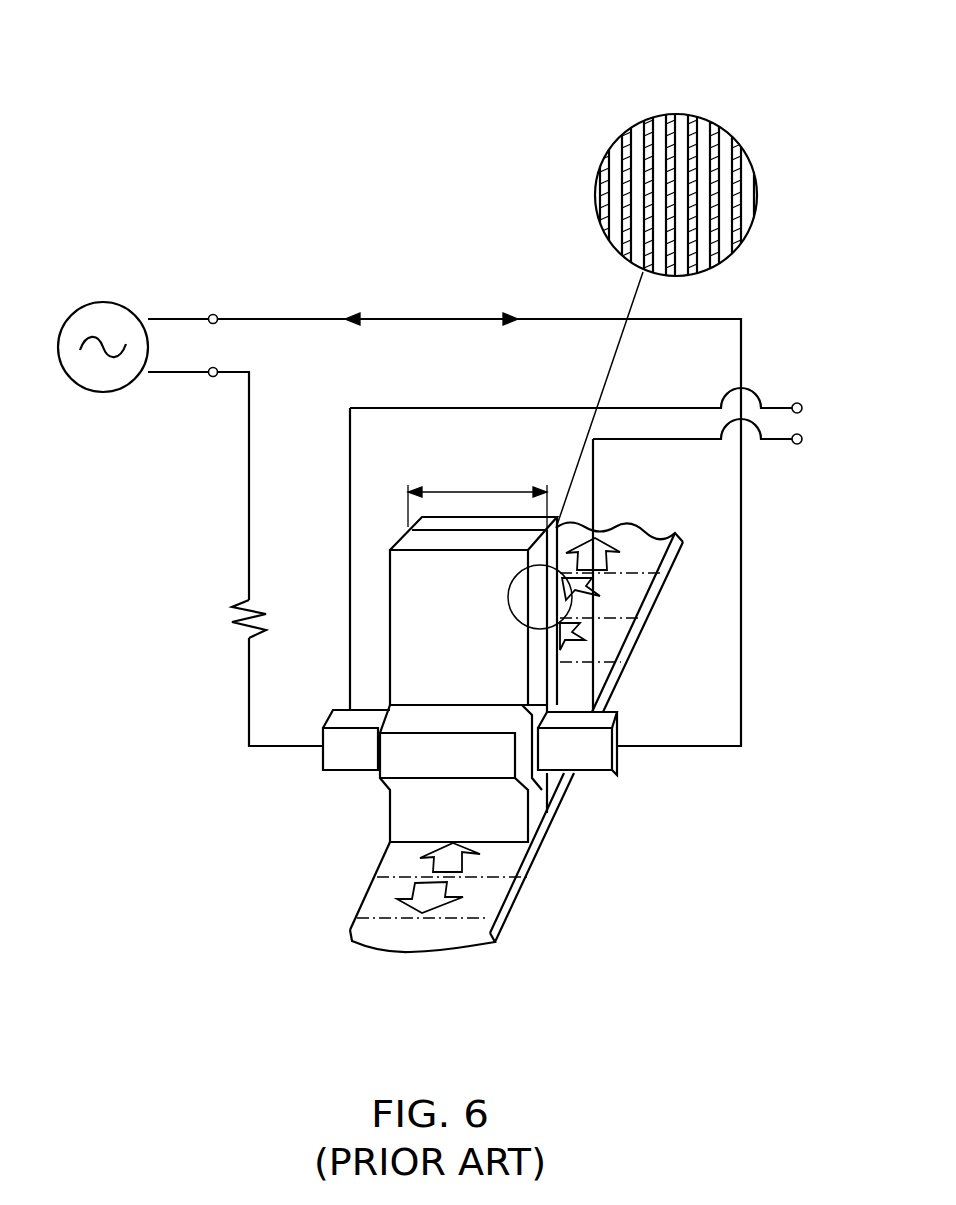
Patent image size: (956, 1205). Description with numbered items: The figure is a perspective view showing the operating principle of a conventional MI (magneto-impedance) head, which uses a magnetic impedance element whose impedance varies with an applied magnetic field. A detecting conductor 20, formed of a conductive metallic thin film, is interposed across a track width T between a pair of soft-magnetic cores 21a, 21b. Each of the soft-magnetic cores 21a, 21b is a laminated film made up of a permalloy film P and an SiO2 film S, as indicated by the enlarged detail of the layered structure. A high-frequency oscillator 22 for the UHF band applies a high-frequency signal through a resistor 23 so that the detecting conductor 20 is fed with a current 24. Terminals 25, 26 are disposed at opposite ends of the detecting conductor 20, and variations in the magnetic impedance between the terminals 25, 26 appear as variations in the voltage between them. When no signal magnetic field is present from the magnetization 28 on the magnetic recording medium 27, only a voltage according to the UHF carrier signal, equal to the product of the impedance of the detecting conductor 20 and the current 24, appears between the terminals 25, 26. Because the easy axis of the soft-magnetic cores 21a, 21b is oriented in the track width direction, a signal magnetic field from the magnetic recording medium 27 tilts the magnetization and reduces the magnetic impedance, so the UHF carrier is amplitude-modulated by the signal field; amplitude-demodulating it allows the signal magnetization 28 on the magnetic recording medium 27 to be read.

The detecting conductor 20 is at (545, 750).
The soft-magnetic core 21a is at (555, 675).
The soft-magnetic core 21b is at (600, 703).
The high-frequency oscillator 22 is at (108, 301).
The resistor 23 is at (233, 617).
The current 24 is at (415, 318).
The terminal 25 is at (802, 403).
The terminal 26 is at (797, 445).
The magnetic recording medium 27 is at (495, 937).
The magnetization 28 is at (445, 865).
The permalloy film P is at (731, 128).
The SiO2 film S is at (735, 258).
The track width T is at (472, 492).